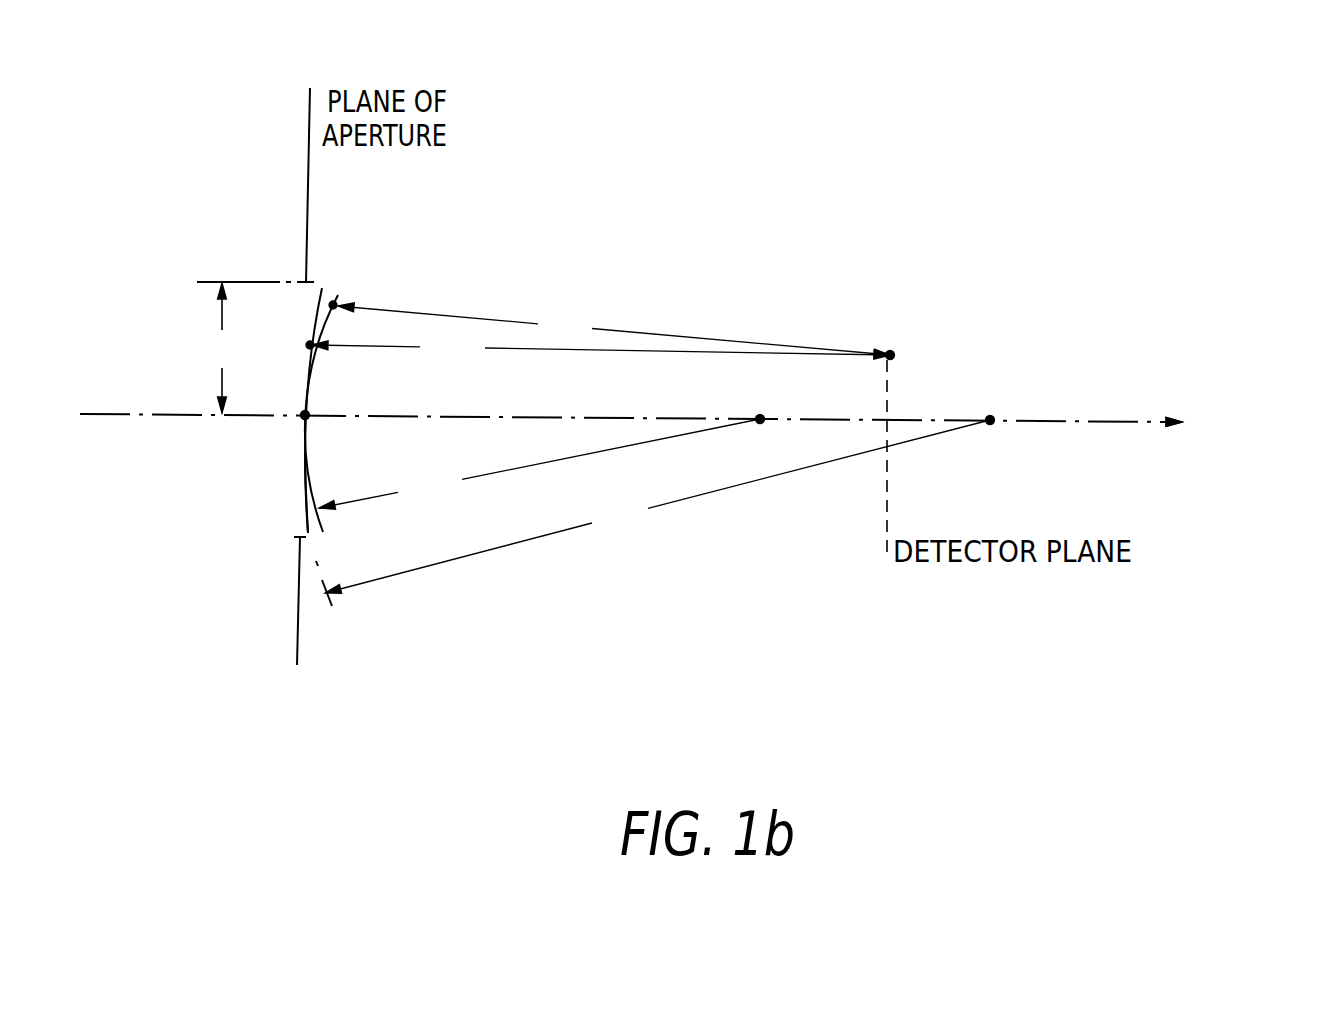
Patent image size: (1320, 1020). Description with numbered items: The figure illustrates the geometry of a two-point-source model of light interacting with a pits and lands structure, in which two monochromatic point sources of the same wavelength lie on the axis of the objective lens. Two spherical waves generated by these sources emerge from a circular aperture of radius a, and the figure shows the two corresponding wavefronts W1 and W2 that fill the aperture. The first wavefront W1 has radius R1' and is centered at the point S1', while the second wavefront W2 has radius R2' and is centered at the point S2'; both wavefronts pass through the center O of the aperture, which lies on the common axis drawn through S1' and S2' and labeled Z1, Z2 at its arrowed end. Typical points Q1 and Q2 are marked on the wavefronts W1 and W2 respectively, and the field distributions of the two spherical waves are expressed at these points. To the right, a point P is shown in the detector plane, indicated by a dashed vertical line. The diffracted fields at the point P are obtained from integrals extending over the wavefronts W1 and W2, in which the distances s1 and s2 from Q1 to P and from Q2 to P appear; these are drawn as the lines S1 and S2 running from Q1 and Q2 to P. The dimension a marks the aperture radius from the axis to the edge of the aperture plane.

The optical axis of first system Z1 is at (658, 429).
The optical axis of second system Z2 is at (1220, 429).
The aperture radius a is at (222, 348).
The center of the circular aperture O is at (312, 398).
The typical point on the first wavefront Q1 is at (345, 284).
The typical point on the second wavefront Q2 is at (291, 350).
The point of the detector plane P is at (904, 336).
The distance Q1P S1 is at (614, 326).
The distance Q2P S2 is at (601, 350).
The center of the first wavefront S1' is at (751, 398).
The center of the second wavefront S2' is at (998, 398).
The radius of the first wavefront R1' is at (539, 466).
The radius of the second wavefront R2' is at (657, 506).
The first wavefront W1 is at (339, 571).
The second wavefront W2 is at (285, 495).